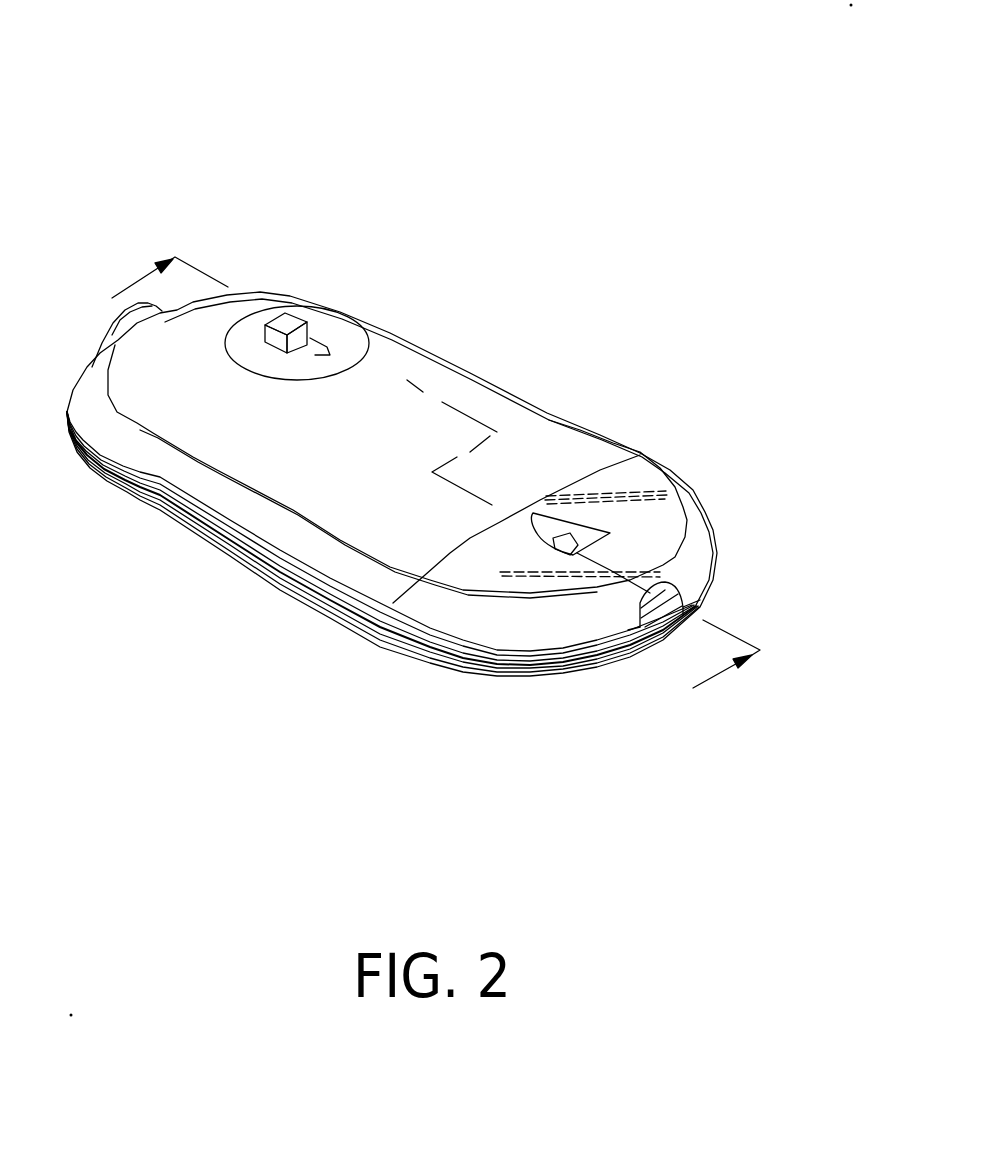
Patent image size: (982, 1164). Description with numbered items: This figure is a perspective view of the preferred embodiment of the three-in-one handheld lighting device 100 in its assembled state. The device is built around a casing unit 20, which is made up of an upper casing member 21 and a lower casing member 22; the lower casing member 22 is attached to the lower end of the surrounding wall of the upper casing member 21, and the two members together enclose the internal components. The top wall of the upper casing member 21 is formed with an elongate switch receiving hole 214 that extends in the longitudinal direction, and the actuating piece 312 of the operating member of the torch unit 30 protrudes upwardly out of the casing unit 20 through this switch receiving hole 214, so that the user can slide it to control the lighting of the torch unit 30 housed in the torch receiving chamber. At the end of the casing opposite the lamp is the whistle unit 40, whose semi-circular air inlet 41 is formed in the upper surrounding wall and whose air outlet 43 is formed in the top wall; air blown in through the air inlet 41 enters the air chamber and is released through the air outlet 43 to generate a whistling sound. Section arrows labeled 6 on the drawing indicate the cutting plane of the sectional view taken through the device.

The card reader housing 100 is at (537, 168).
The casing unit 20 is at (476, 370).
The upper casing member 21 is at (513, 396).
The lower casing member 22 is at (348, 618).
The torch unit 30 is at (240, 341).
The actuating piece 312 is at (292, 350).
The switch receiving hole 214 is at (308, 350).
The air outlet 43 is at (584, 538).
The air inlet 41 is at (691, 580).
The whistle unit 40 is at (718, 555).
The section line 6- 6 is at (435, 464).